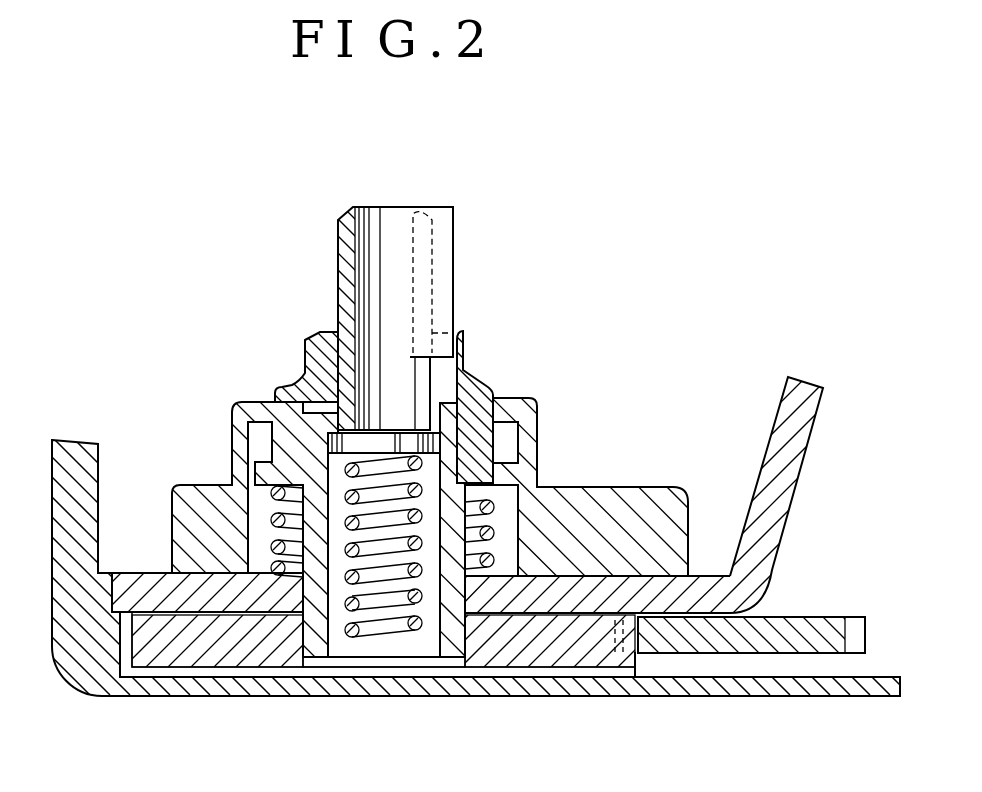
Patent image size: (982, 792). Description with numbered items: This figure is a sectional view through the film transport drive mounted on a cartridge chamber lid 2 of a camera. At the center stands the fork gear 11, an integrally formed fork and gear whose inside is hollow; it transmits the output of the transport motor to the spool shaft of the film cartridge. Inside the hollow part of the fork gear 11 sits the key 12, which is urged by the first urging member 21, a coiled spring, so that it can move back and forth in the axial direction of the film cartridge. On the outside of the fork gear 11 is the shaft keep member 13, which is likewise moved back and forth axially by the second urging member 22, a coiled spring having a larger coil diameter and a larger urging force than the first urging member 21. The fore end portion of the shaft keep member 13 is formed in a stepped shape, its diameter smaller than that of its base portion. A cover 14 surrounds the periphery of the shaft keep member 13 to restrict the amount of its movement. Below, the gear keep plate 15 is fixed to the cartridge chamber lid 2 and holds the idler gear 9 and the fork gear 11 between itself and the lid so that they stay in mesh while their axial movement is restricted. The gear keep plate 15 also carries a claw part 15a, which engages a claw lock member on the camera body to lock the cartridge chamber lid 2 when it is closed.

The cartridge chamber lid 2 is at (98, 653).
The idler gear 9 is at (812, 627).
The fork gear 11 is at (287, 647).
The key 12 is at (398, 252).
The shaft keep member 13 is at (322, 353).
The cover 14 is at (625, 512).
The gear keep plate 15 is at (147, 590).
The claw part 15a is at (778, 432).
The first urging member 21 is at (400, 632).
The second urging member 22 is at (487, 562).